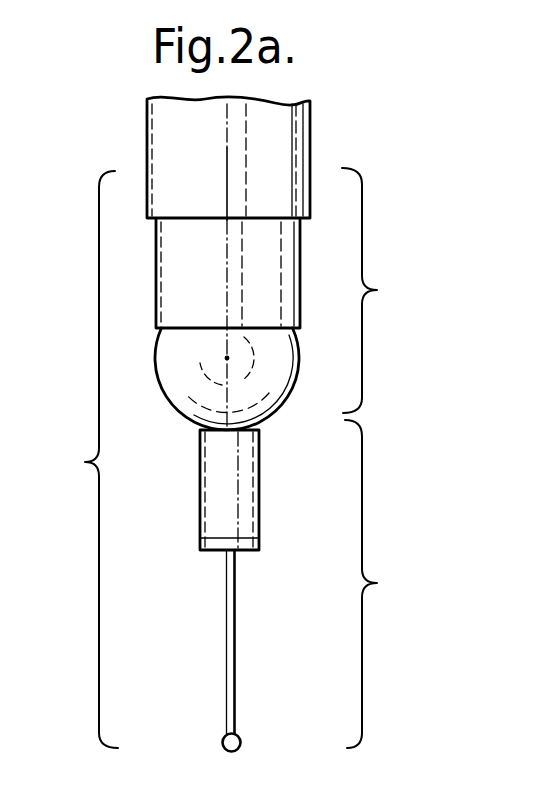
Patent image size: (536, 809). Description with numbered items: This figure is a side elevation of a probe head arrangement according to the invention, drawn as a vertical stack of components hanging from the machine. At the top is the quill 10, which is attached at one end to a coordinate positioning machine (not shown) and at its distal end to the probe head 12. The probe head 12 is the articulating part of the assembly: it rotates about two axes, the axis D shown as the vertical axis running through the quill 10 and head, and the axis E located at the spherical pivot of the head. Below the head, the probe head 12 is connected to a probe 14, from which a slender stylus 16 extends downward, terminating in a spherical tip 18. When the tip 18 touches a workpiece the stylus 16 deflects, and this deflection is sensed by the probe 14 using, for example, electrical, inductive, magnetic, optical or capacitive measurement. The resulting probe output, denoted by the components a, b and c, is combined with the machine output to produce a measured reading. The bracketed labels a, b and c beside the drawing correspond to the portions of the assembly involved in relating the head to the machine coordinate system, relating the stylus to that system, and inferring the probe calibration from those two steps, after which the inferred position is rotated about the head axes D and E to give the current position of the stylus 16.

The quill 10 is at (276, 148).
The probe head 12 is at (308, 338).
The probe 14 is at (222, 503).
The stylus 16 is at (229, 632).
The tip 18 is at (224, 738).
The axis D is at (226, 161).
The axis E is at (227, 358).
The probe output a is at (381, 290).
The probe output b is at (79, 459).
The probe output c is at (382, 584).